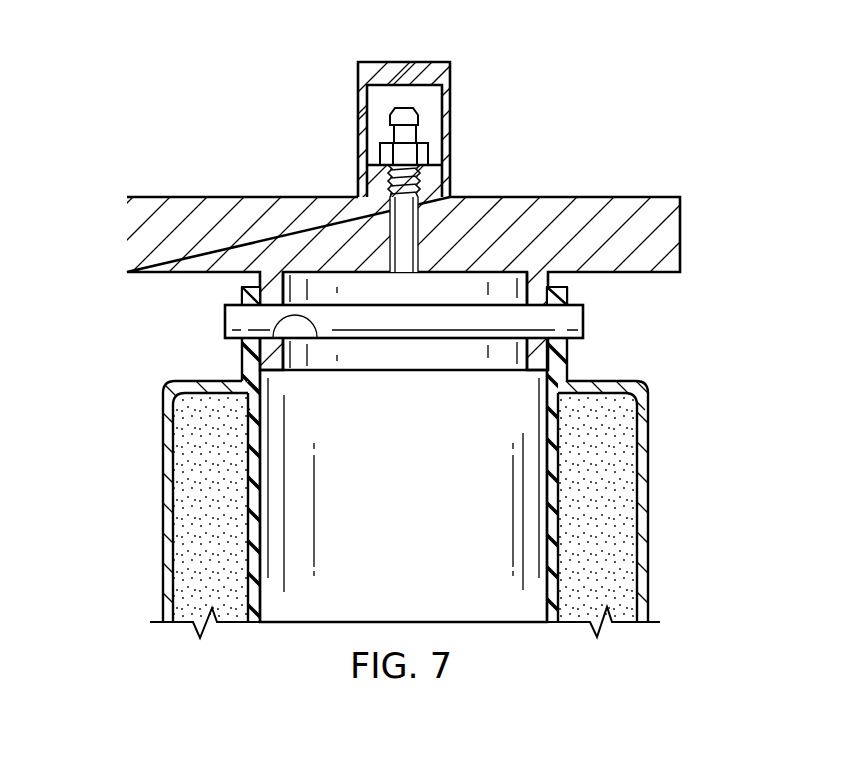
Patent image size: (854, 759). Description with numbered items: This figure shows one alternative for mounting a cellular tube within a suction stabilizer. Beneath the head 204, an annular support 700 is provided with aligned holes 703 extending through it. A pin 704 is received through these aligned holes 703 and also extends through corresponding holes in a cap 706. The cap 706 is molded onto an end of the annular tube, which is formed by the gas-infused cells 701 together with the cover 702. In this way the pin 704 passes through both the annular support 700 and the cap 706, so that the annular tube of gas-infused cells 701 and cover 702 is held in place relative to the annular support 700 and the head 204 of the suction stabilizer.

The head 204 is at (127, 225).
The annular support 700 is at (540, 372).
The gas-infused cells 701 is at (620, 520).
The cover 702 is at (163, 553).
The aligned holes 703 is at (317, 337).
The pin 704 is at (422, 373).
The cap 706 is at (242, 360).